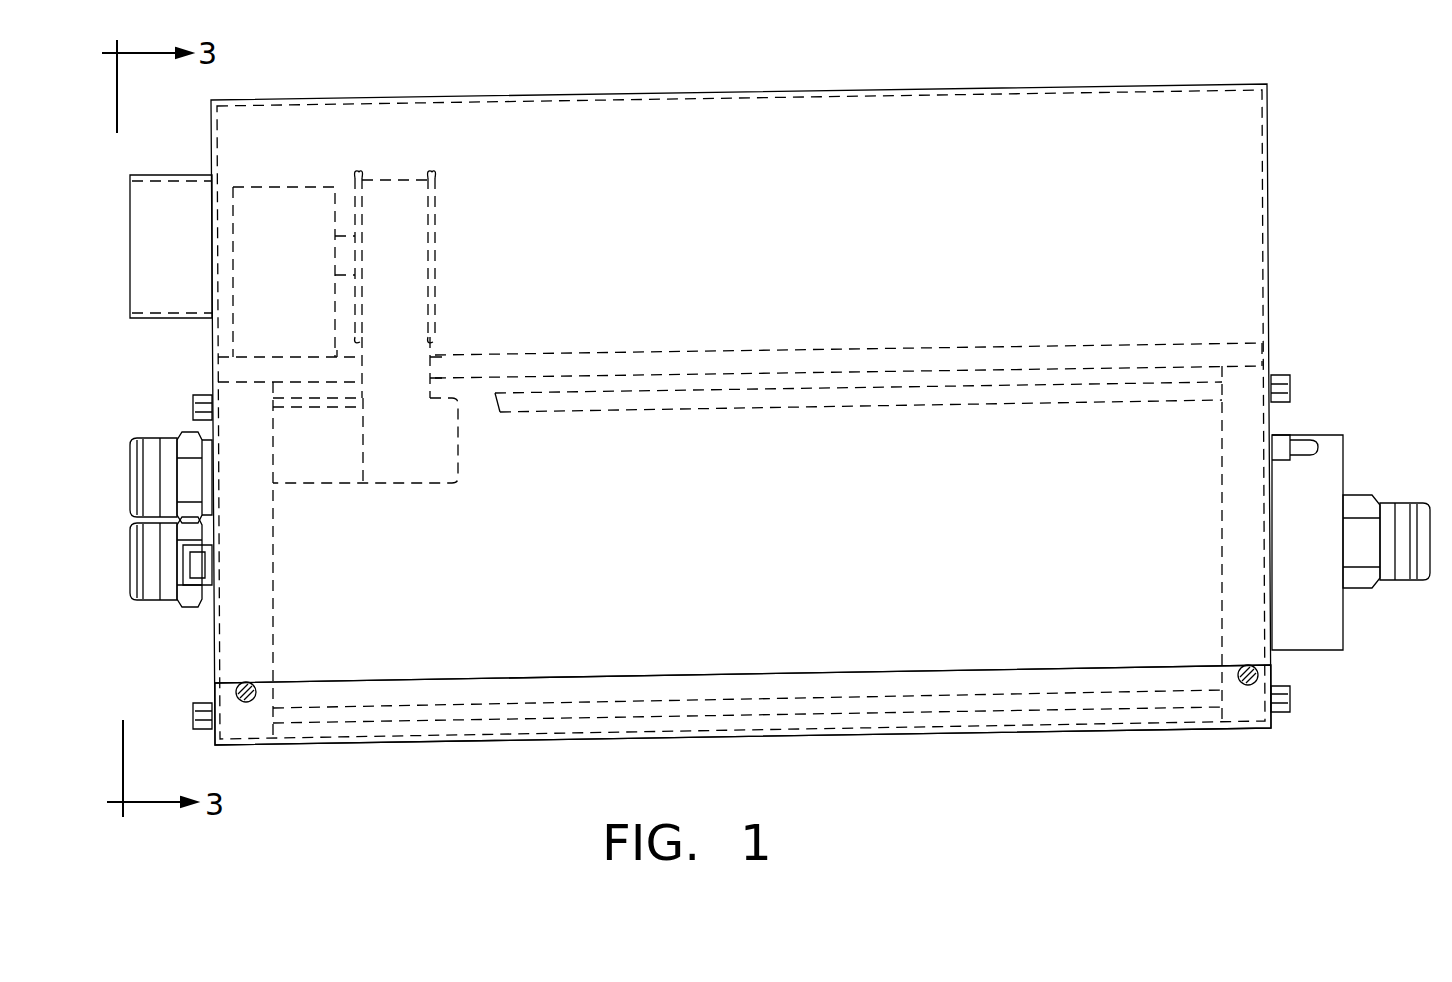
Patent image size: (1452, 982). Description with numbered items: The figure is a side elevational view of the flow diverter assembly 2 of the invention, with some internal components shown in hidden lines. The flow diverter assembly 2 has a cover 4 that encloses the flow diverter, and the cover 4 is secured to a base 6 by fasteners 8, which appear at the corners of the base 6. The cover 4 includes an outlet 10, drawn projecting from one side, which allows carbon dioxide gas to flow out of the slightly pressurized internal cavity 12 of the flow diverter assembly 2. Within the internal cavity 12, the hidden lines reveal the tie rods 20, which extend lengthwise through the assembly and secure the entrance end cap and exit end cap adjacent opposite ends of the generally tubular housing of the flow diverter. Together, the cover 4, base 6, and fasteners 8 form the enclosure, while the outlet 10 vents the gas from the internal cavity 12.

The flow diverter assembly 2 is at (1203, 73).
The cover 4 is at (488, 96).
The base 6 is at (247, 728).
The fasteners 8 is at (1258, 673).
The outlet 10 is at (160, 263).
The internal cavity 12 is at (700, 135).
The tie rods 20 is at (835, 400).